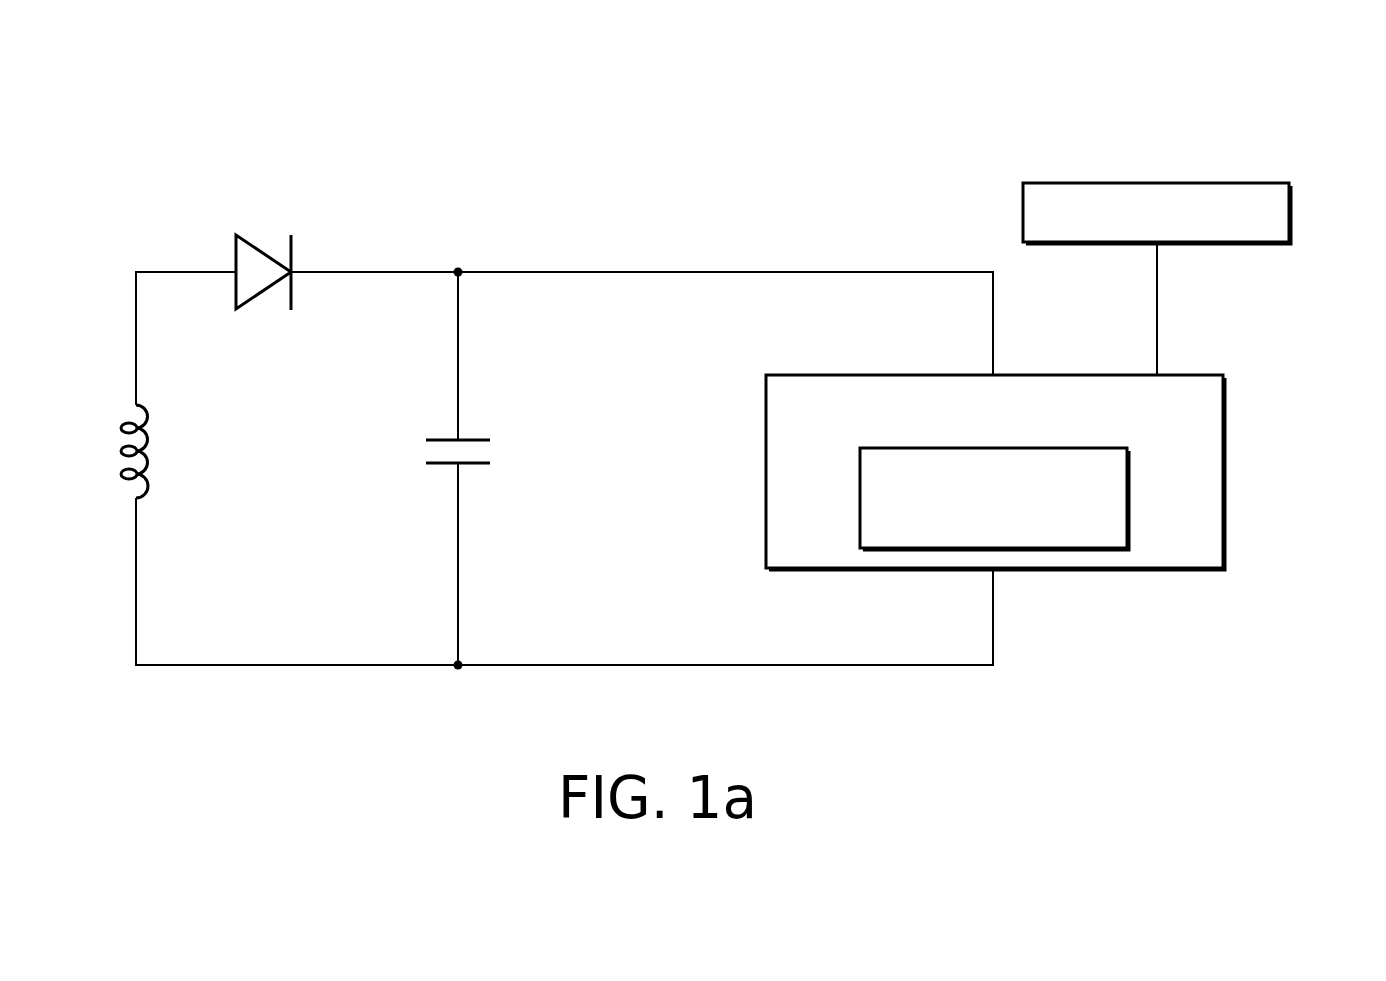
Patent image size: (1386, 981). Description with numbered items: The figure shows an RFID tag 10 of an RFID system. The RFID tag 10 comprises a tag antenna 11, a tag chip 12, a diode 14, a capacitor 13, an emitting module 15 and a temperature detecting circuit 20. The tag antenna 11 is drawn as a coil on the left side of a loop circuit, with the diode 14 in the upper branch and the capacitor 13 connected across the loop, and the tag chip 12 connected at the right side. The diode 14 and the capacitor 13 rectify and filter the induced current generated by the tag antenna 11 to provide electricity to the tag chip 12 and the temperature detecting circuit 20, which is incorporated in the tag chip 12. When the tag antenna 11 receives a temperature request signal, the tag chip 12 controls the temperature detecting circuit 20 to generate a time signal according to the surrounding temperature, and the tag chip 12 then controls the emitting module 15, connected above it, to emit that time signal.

The RFID tag 10 is at (94, 118).
The tag antenna 11 is at (153, 452).
The tag chip 12 is at (1226, 452).
The capacitor 13 is at (490, 452).
The diode 14 is at (262, 250).
The emitting module 15 is at (1292, 212).
The temperature detecting circuit 20 is at (1130, 498).